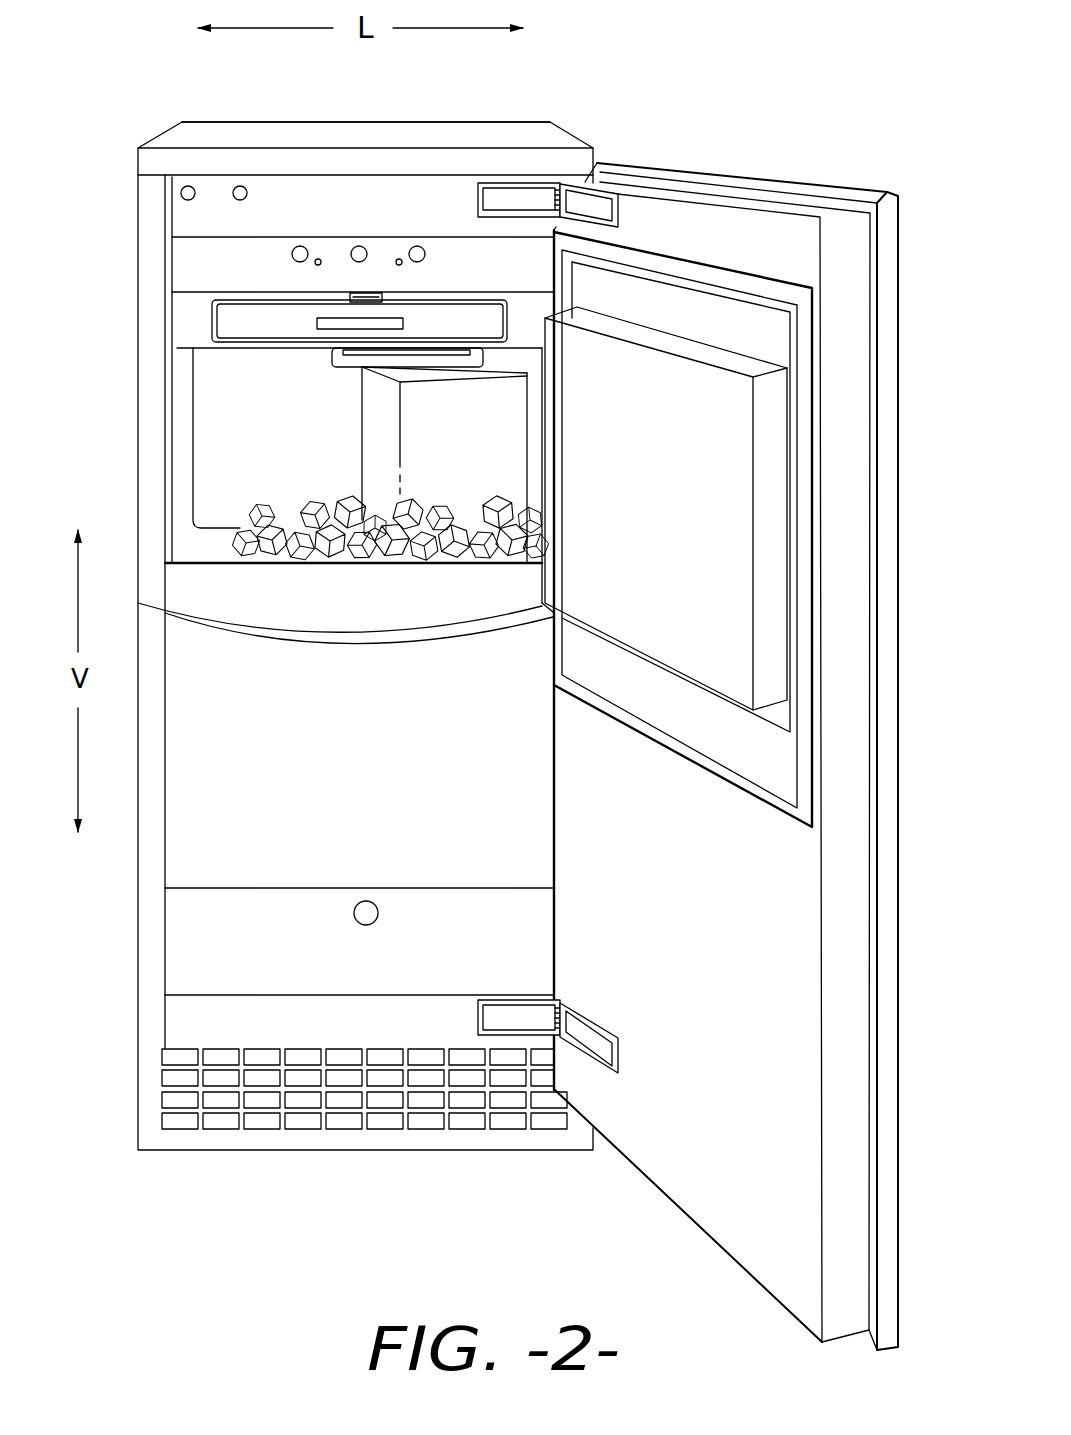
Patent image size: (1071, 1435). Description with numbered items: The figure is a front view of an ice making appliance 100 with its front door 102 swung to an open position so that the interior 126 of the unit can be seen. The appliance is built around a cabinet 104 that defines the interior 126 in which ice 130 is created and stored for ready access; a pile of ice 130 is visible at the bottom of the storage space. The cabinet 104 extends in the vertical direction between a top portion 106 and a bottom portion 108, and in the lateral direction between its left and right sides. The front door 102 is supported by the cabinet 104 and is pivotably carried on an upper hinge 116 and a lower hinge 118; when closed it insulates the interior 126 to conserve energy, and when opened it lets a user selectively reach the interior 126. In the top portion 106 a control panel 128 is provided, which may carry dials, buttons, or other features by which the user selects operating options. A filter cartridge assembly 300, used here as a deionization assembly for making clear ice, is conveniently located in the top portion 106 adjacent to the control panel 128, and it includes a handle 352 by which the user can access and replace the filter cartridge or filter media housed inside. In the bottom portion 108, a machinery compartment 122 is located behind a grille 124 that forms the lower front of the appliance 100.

The ice making appliance 100 is at (597, 110).
The front door 102 is at (848, 528).
The cabinet 104 is at (228, 133).
The top portion 106 is at (118, 195).
The bottom portion 108 is at (304, 1113).
The hinge 116 is at (565, 183).
The hinge 118 is at (566, 1000).
The machinery compartment 122 is at (203, 1021).
The grille 124 is at (263, 1137).
The interior 126 is at (228, 408).
The control panel 128 is at (458, 257).
The ice 130 is at (258, 530).
The filter cartridge assembly 300 is at (299, 221).
The handle 352 is at (347, 322).